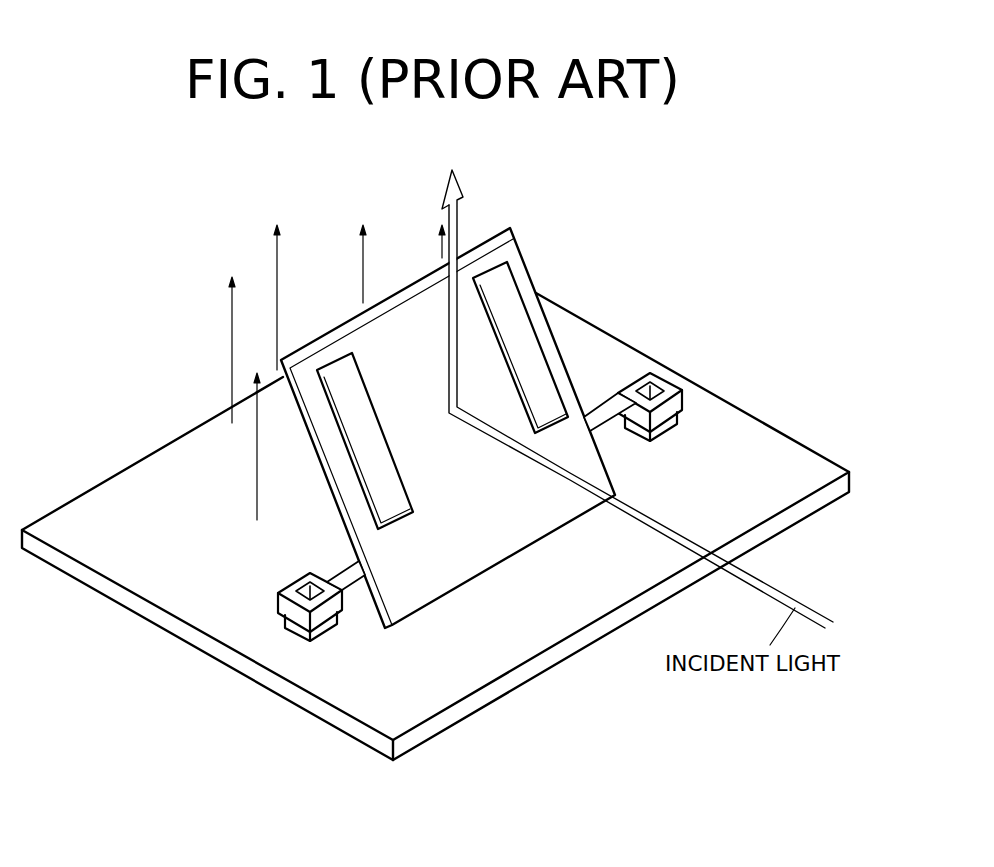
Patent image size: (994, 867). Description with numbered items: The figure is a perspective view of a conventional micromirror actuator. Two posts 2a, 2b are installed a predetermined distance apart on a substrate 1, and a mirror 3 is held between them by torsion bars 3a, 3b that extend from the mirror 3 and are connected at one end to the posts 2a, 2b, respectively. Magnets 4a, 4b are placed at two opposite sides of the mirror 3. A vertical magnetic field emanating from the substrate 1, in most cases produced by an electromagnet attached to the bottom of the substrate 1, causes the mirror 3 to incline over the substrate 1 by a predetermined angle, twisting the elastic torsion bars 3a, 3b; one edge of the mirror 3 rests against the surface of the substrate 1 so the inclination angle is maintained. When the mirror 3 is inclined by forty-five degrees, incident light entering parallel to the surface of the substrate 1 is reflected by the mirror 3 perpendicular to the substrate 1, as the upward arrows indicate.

The substrate 1 is at (745, 424).
The post 2a is at (293, 590).
The post 2b is at (665, 388).
The mirror 3 is at (448, 412).
The torsion bar 3a is at (342, 567).
The torsion bar 3b is at (616, 411).
The magnet 4a is at (340, 373).
The magnet 4b is at (497, 278).